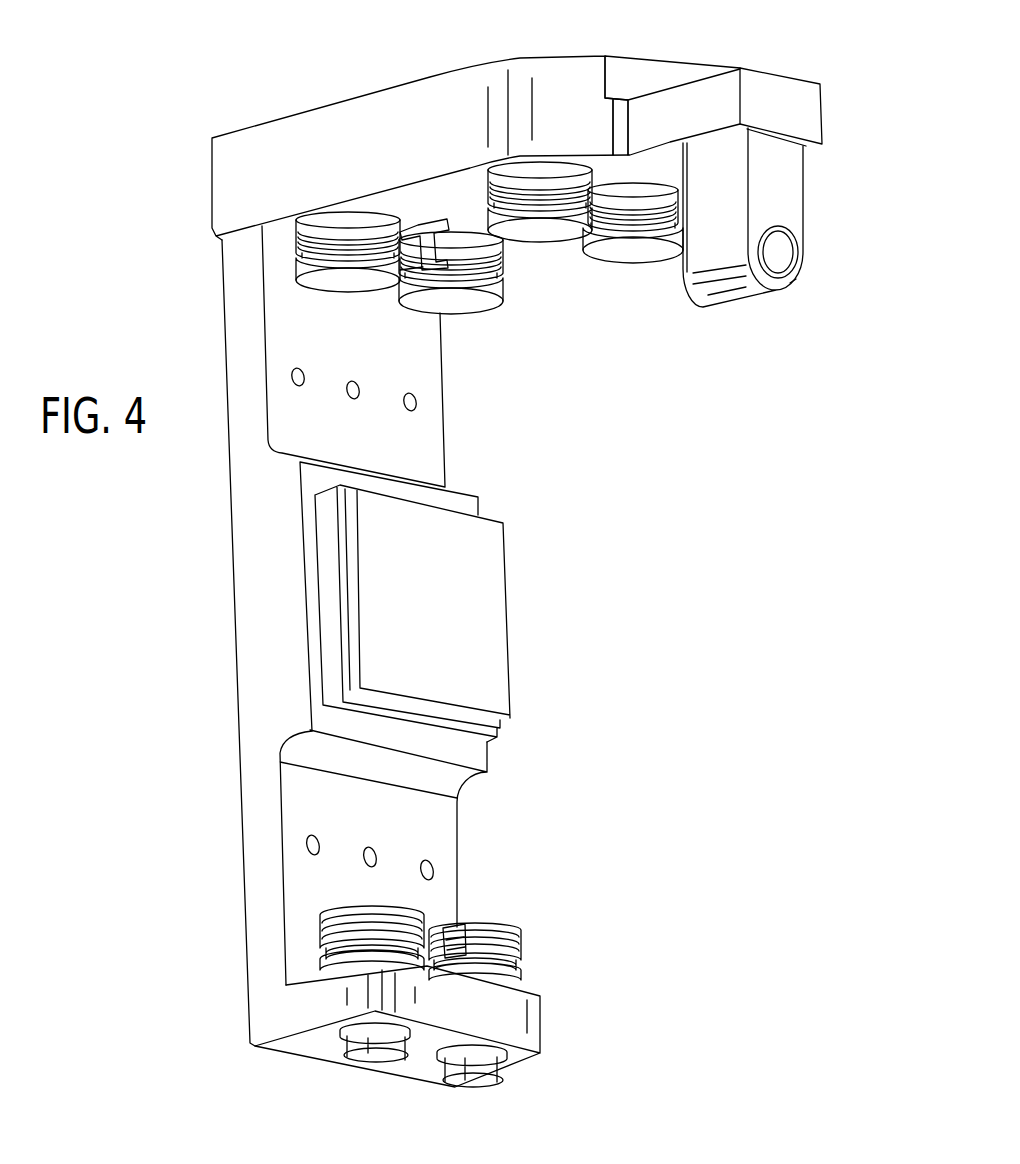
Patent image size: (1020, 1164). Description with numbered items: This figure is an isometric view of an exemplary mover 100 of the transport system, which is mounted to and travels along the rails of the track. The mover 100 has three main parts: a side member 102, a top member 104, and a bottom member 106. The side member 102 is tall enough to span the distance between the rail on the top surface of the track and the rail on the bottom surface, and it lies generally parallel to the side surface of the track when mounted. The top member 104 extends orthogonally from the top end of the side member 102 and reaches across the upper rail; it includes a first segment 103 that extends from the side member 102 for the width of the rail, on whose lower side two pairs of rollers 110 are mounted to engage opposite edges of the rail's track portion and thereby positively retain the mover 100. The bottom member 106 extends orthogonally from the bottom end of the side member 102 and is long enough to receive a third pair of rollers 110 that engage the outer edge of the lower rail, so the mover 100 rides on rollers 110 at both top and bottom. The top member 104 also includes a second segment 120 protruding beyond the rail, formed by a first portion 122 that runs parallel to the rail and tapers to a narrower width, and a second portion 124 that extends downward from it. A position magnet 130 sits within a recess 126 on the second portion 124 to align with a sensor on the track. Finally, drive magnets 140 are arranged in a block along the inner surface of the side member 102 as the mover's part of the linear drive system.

The mover 100 is at (186, 58).
The side member 102 is at (232, 577).
The first segment 103 is at (328, 145).
The top member 104 is at (388, 92).
The bottom member 106 is at (508, 1012).
The rollers 110 is at (343, 278).
The second segment 120 is at (776, 78).
The first portion 122 is at (683, 107).
The second portion 124 is at (780, 185).
The recess 126 is at (797, 262).
The position magnet 130 is at (777, 253).
The drive magnets 140 is at (480, 617).